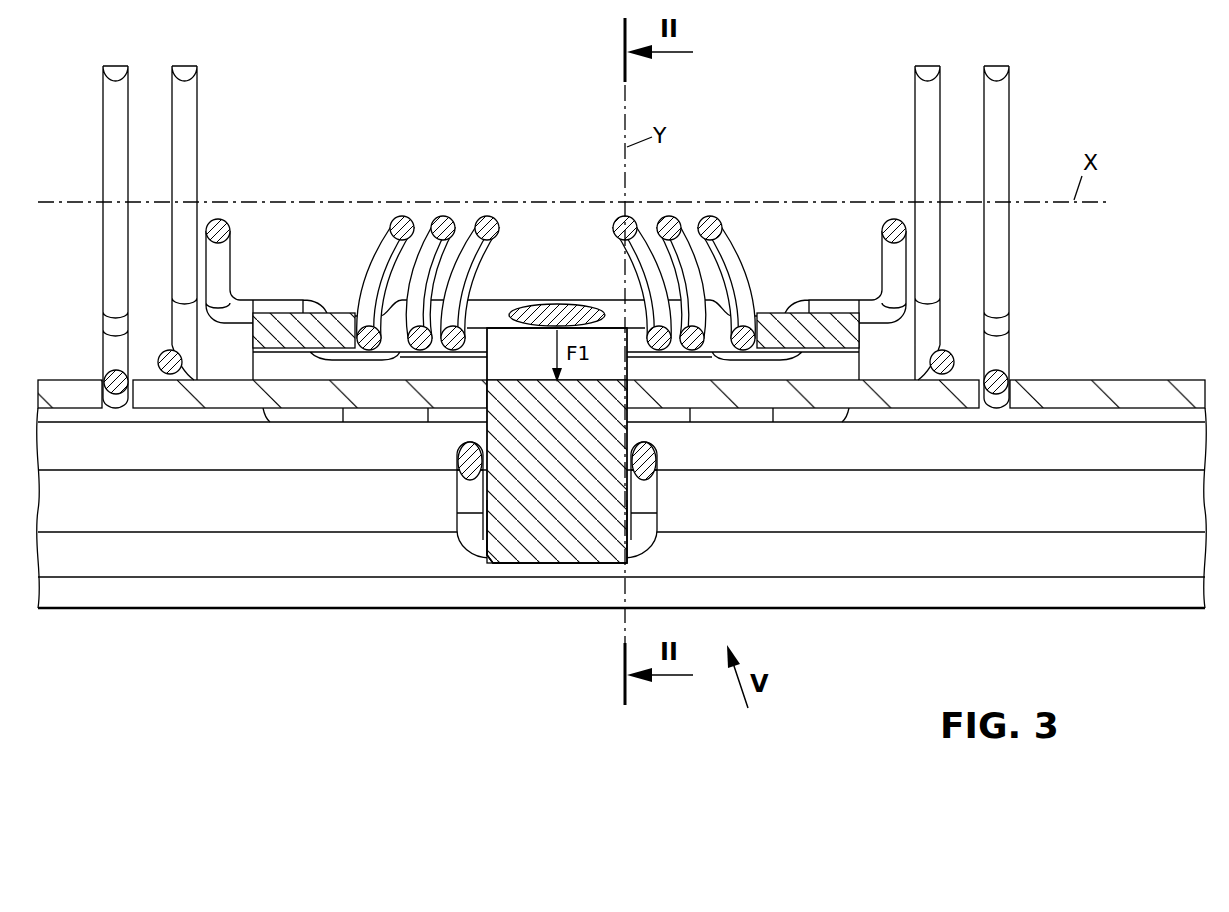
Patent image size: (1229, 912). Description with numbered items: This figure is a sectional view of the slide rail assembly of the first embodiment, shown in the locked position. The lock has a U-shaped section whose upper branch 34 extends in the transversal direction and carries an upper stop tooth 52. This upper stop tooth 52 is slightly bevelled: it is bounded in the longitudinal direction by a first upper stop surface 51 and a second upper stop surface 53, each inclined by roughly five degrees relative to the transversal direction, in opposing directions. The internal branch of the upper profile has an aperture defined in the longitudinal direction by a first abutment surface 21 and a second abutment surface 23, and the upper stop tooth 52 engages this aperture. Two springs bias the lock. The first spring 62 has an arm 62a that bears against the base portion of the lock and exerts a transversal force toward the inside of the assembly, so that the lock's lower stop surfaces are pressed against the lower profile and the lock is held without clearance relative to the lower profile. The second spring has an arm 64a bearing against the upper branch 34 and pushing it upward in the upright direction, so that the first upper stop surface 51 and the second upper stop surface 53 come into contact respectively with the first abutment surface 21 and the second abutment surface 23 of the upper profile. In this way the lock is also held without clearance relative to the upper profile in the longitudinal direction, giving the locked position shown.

The first abutment surface 21 is at (627, 390).
The second abutment surface 23 is at (485, 393).
The upper branch 34 is at (526, 532).
The first upper stop surface 51 is at (541, 512).
The upper stop tooth 52 is at (560, 412).
The second upper stop surface 53 is at (492, 547).
The first spring 62 is at (997, 273).
The arm 62a is at (542, 312).
The arm 64a is at (477, 535).